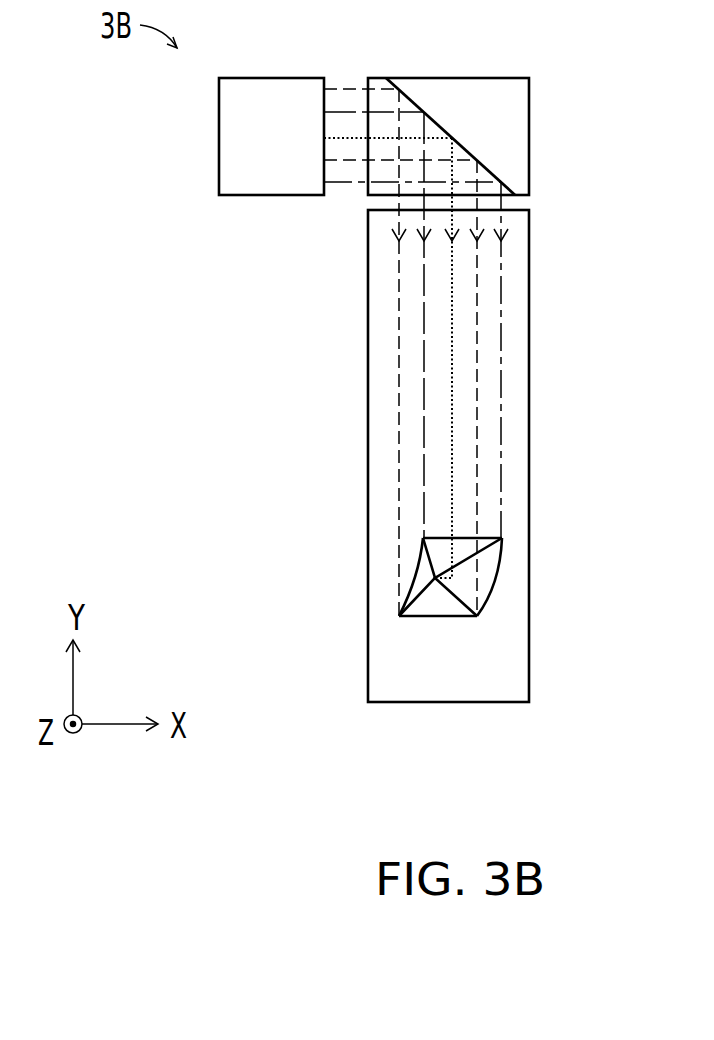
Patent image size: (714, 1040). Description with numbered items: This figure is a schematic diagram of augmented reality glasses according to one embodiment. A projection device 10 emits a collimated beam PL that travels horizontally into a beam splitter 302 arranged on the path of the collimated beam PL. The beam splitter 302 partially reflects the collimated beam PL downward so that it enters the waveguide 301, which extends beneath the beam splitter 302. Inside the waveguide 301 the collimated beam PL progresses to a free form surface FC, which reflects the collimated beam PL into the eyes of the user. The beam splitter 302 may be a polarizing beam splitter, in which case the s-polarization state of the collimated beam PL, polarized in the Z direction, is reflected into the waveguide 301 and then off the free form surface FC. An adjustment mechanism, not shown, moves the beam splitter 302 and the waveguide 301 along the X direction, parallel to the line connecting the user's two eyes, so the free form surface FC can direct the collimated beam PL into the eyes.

The projection device 10 is at (241, 78).
The collimated beam PL is at (350, 79).
The beam splitter 302 is at (530, 139).
The waveguide 301 is at (367, 449).
The free form surface FC is at (494, 582).